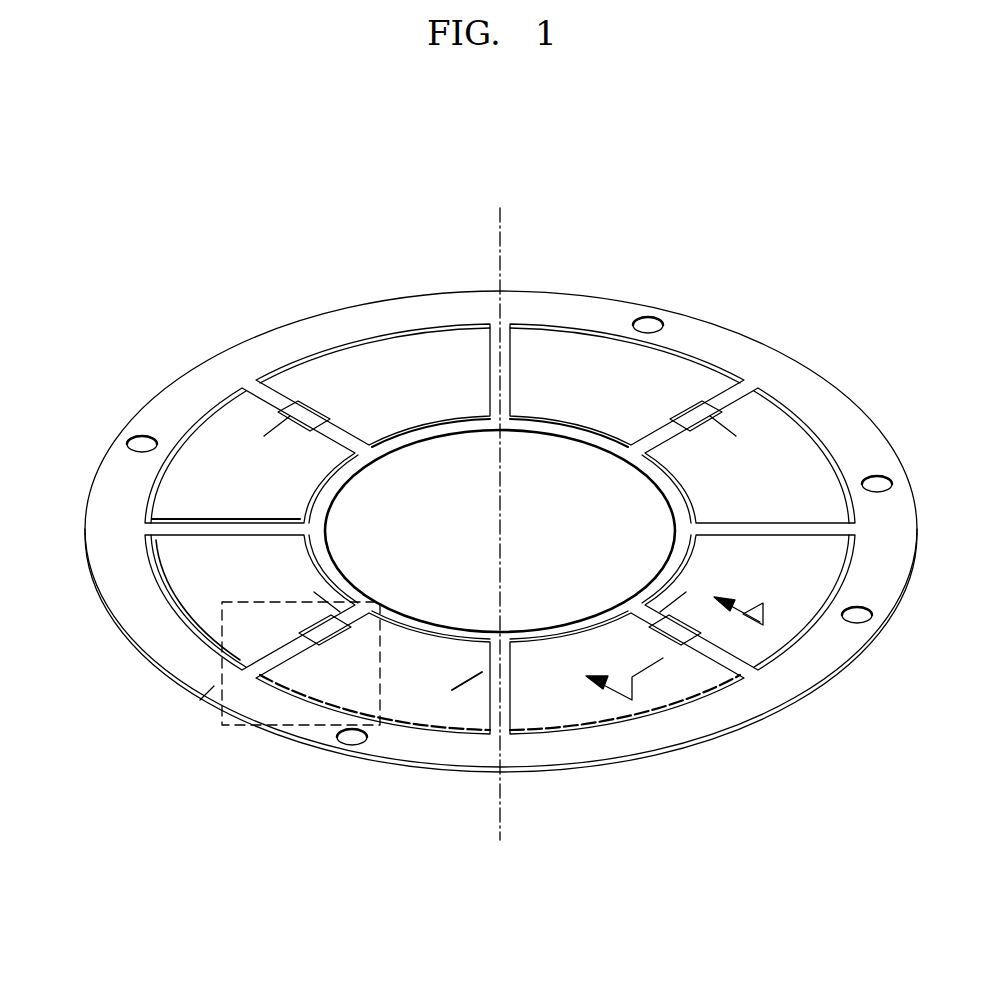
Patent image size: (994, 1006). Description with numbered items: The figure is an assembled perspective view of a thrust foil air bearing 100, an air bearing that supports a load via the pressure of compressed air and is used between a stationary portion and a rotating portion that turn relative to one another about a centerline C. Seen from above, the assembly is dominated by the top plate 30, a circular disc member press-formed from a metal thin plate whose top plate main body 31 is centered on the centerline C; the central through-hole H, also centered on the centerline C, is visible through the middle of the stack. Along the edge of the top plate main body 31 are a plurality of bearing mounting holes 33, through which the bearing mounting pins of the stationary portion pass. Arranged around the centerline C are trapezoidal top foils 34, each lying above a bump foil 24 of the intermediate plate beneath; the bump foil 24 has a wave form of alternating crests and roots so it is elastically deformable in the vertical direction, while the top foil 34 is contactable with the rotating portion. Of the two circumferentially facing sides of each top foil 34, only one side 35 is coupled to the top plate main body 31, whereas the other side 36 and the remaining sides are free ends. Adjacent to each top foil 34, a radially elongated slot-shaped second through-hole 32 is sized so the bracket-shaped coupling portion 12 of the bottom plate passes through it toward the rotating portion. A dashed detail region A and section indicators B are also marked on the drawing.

The thrust foil air bearing 100 is at (188, 250).
The top plate 30 is at (800, 385).
The bearing mounting hole 33 is at (142, 437).
The one side 35 is at (190, 536).
The top foil 34 is at (195, 592).
The coupling portion 12 is at (250, 618).
The top plate main body 31 is at (210, 690).
The second through-hole 32 is at (270, 700).
The other side 36 is at (297, 620).
The bump foil 24 is at (430, 727).
The through-hole H is at (643, 480).
The centerline C is at (504, 250).
The detail region A is at (310, 727).
The section line B is at (673, 635).